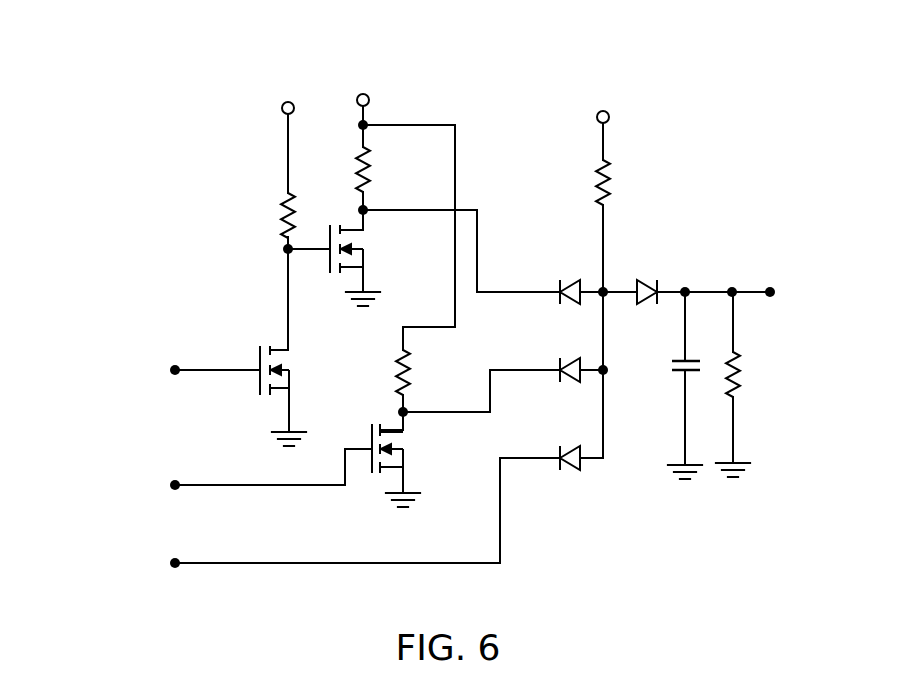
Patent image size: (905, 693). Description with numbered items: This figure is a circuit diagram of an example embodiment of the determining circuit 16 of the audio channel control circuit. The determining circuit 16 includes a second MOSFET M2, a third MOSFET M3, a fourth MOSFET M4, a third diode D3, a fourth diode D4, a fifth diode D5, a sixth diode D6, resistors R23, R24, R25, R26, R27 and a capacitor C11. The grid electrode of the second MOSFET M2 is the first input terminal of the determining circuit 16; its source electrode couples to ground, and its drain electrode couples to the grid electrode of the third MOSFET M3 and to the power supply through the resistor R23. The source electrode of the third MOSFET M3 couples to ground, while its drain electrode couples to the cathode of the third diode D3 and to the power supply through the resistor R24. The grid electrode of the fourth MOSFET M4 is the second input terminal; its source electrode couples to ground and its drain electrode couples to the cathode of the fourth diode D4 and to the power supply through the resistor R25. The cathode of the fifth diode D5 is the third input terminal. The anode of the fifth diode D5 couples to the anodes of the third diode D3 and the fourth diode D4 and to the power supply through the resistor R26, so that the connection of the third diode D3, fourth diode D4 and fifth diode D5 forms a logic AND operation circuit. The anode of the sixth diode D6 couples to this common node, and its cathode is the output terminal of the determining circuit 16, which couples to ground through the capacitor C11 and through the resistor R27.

The determining circuit 16 is at (443, 37).
The resistor R23 is at (265, 215).
The resistor R24 is at (383, 169).
The resistor R25 is at (424, 372).
The resistor R26 is at (581, 182).
The resistor R27 is at (754, 374).
The second MOSFET M2 is at (293, 389).
The third MOSFET M3 is at (363, 258).
The fourth MOSFET M4 is at (404, 458).
The third diode D3 is at (570, 278).
The fourth diode D4 is at (571, 358).
The fifth diode D5 is at (570, 445).
The sixth diode D6 is at (646, 279).
The capacitor C11 is at (665, 369).